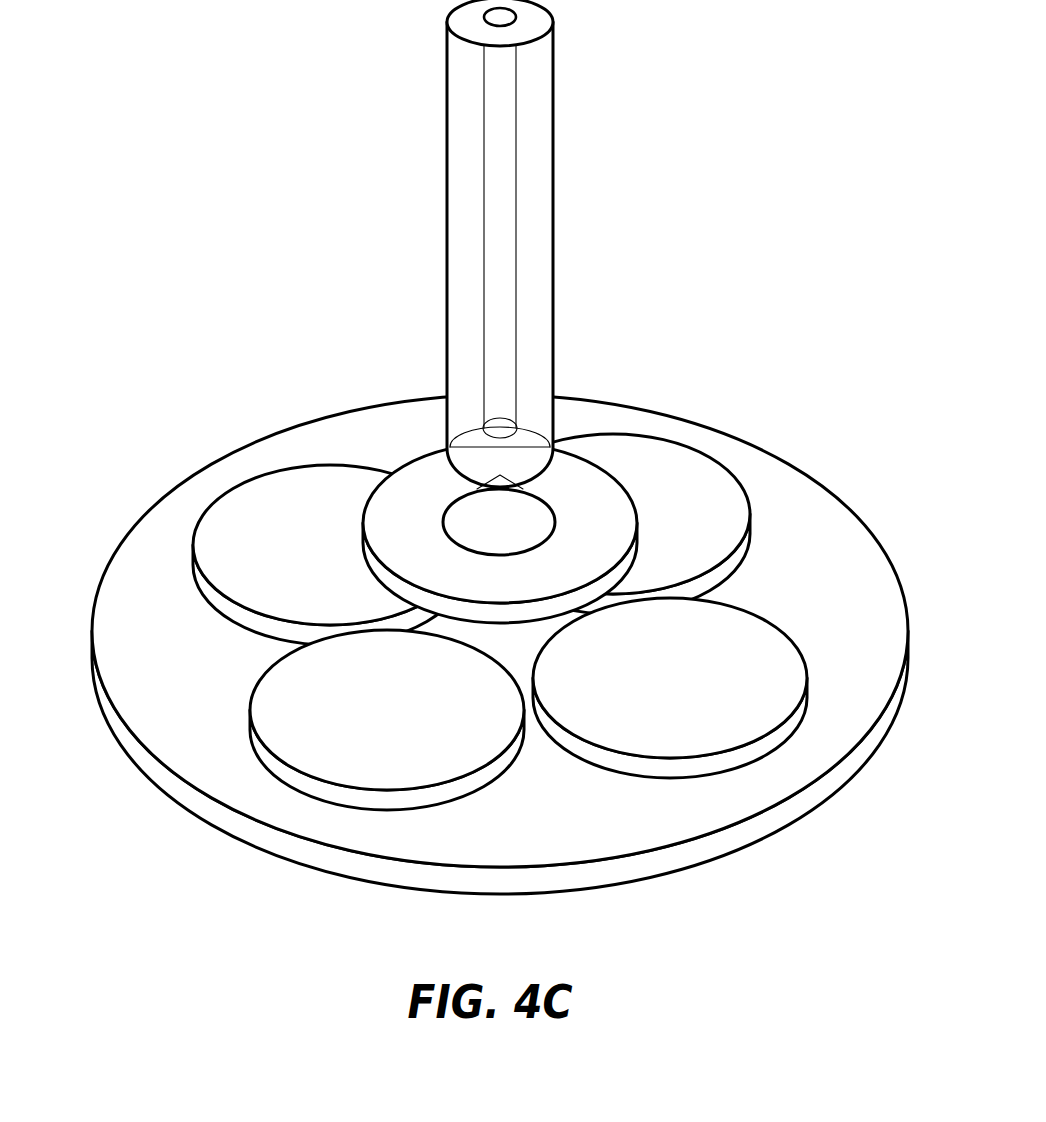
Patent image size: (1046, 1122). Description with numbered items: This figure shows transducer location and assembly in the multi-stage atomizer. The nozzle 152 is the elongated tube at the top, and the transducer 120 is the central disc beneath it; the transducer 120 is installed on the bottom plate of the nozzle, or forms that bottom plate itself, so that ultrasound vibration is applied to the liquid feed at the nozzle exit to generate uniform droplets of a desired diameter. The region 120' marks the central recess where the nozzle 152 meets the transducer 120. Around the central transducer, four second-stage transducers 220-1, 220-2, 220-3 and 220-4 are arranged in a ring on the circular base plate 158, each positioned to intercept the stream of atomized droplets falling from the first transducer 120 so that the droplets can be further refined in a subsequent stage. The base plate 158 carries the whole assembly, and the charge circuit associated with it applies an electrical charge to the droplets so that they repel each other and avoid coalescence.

The nozzle 152 is at (447, 85).
The transducer 120 is at (406, 510).
The substrate cavity / dispensing tip 120' is at (409, 456).
The substrate disc 220-1 is at (654, 509).
The substrate disc 220-2 is at (672, 708).
The substrate disc 220-3 is at (351, 741).
The substrate disc 220-4 is at (233, 557).
The charge circuit 158 is at (558, 838).